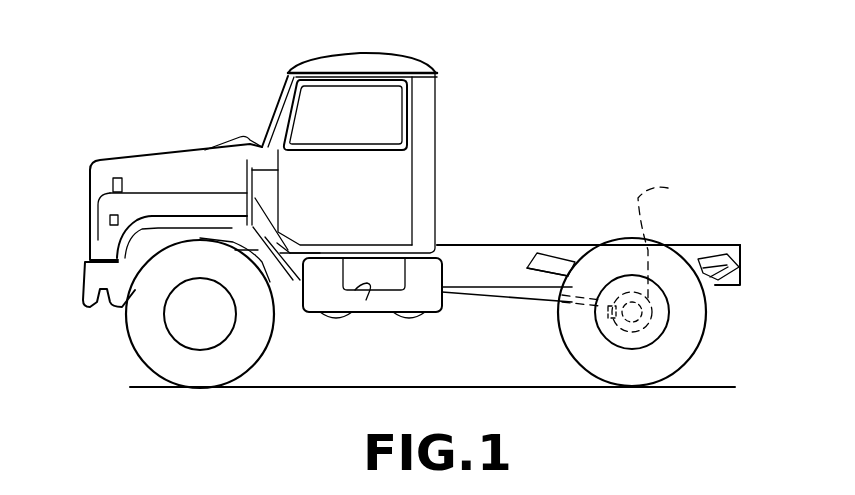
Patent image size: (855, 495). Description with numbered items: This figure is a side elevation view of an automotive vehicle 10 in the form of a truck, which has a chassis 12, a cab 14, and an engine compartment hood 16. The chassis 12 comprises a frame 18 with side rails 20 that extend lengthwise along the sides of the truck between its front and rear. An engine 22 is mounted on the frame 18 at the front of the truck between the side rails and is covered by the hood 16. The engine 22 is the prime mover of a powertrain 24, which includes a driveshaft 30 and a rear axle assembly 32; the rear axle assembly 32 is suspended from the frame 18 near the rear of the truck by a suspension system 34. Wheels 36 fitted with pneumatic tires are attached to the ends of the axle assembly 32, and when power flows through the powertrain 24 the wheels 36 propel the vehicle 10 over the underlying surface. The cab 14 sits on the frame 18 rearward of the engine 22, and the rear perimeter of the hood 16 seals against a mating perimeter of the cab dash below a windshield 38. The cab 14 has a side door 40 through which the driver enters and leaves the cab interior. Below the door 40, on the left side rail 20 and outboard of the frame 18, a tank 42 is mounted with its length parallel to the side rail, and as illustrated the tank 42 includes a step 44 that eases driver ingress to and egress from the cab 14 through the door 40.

The automotive vehicle 10 is at (437, 73).
The chassis 12 is at (738, 248).
The cab 14 is at (435, 120).
The engine compartment hood 16 is at (95, 160).
The frame 18 is at (580, 245).
The side rails 20 is at (500, 260).
The engine 22 is at (152, 238).
The powertrain 24 is at (485, 297).
The driveshaft 30 is at (538, 300).
The rear axle assembly 32 is at (631, 241).
The suspension system 34 is at (717, 287).
The wheels 36 is at (680, 345).
The windshield 38 is at (276, 103).
The side door 40 is at (437, 195).
The tank 42 is at (378, 312).
The step 44 is at (366, 300).